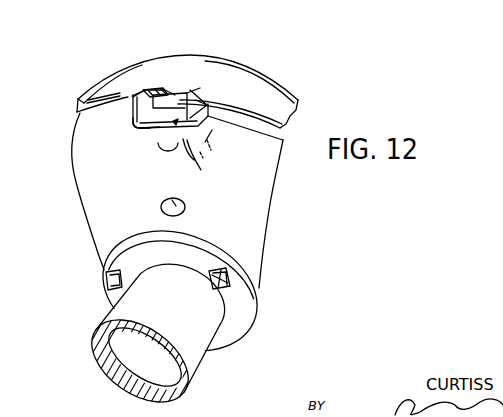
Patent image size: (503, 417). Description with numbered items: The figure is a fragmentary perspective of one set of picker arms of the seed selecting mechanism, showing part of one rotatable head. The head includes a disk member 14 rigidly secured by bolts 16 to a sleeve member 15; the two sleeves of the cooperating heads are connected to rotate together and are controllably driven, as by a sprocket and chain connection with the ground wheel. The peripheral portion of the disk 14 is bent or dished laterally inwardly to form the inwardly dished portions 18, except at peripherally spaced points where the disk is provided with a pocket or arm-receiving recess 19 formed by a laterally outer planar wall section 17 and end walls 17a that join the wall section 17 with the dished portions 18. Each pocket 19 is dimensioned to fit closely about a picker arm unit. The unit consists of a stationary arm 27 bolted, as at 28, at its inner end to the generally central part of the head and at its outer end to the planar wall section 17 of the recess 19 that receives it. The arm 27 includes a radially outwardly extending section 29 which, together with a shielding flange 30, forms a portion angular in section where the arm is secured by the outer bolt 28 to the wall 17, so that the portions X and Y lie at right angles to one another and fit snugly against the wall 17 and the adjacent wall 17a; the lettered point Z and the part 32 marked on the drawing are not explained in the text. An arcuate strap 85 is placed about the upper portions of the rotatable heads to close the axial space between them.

The disk member 14 is at (253, 208).
The sleeve member 15 is at (132, 300).
The bolts 16 is at (224, 283).
The planar wall section 17 is at (171, 142).
The end wall 17a is at (137, 97).
The inwardly dished portion 18 is at (80, 112).
The pocket or arm-receiving recess 19 is at (162, 134).
The stationary arm 27 is at (201, 86).
The bolt 28 is at (172, 200).
The radially outwardly extending section 29 is at (203, 110).
The shielding flange 30 is at (158, 128).
The tab 32 is at (157, 88).
The arcuate strap 85 is at (275, 98).
The portion x X is at (143, 131).
The portion y Y is at (197, 105).
The point Z is at (140, 100).